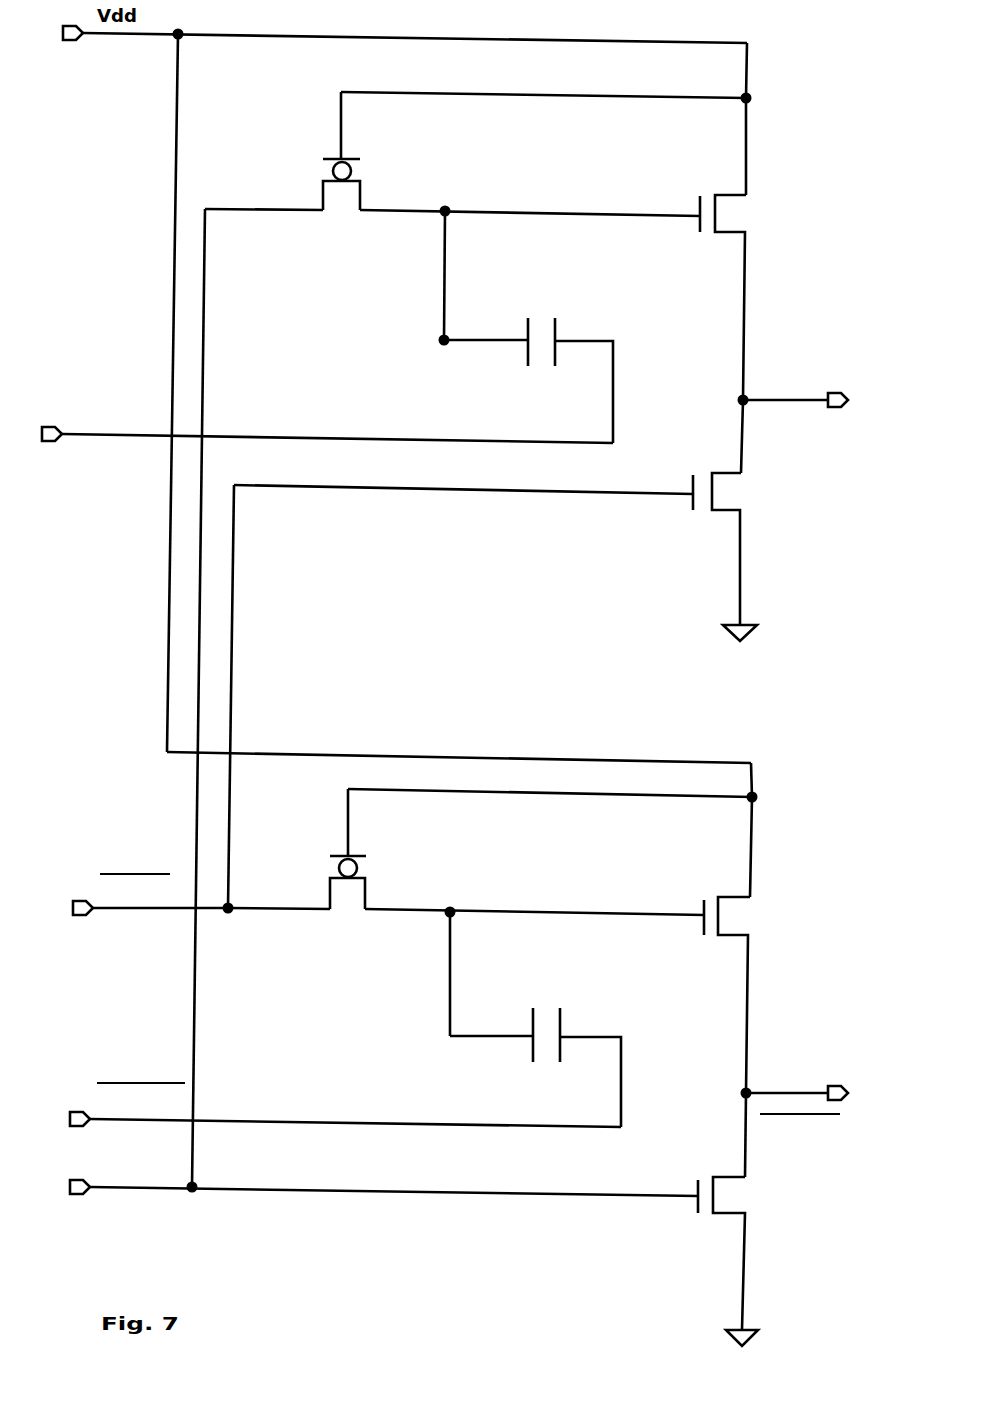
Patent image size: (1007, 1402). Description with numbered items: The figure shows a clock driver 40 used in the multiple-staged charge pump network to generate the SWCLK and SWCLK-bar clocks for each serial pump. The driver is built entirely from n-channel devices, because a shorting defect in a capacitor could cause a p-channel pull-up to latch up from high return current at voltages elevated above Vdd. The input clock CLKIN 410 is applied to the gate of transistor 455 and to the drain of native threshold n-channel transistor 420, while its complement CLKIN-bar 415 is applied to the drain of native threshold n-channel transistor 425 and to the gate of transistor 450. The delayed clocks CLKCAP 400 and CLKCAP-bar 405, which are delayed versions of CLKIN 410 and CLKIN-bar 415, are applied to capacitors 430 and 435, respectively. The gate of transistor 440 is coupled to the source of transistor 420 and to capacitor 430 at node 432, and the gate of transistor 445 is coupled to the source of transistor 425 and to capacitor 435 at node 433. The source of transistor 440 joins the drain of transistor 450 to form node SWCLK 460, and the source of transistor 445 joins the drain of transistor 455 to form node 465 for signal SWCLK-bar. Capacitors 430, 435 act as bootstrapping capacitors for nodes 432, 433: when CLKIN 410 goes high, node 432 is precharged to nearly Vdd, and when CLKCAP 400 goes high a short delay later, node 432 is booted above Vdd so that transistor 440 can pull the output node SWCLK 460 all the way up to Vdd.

The clock driver 40 is at (410, 657).
The CLKCAP 400 is at (327, 432).
The CLKCAP-bar 405 is at (345, 1115).
The CLKIN 410 is at (384, 1187).
The CLKIN-bar 415 is at (153, 906).
The native threshold n-channel transistor 420 is at (338, 215).
The native threshold n-channel transistor 425 is at (347, 912).
The capacitor 430 is at (541, 368).
The node 432 is at (530, 250).
The node 433 is at (534, 937).
The capacitor 435 is at (548, 1058).
The transistor 440 is at (741, 208).
The transistor 445 is at (742, 920).
The transistor 450 is at (735, 495).
The transistor 455 is at (740, 1196).
The node SWCLK 460 is at (793, 399).
The node for signal SWCLK-bar 465 is at (795, 1097).